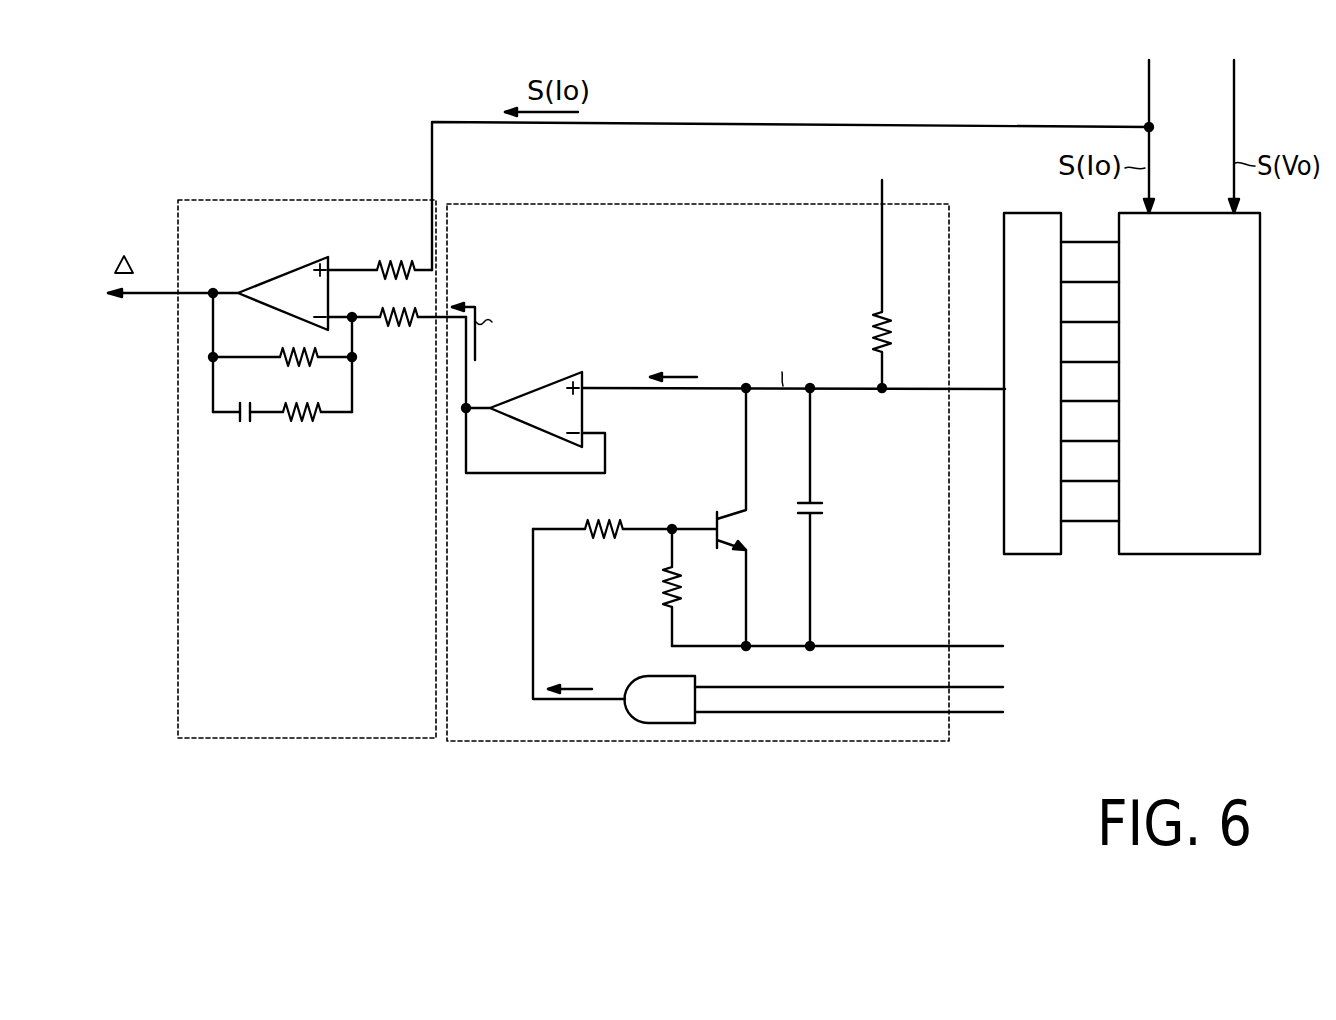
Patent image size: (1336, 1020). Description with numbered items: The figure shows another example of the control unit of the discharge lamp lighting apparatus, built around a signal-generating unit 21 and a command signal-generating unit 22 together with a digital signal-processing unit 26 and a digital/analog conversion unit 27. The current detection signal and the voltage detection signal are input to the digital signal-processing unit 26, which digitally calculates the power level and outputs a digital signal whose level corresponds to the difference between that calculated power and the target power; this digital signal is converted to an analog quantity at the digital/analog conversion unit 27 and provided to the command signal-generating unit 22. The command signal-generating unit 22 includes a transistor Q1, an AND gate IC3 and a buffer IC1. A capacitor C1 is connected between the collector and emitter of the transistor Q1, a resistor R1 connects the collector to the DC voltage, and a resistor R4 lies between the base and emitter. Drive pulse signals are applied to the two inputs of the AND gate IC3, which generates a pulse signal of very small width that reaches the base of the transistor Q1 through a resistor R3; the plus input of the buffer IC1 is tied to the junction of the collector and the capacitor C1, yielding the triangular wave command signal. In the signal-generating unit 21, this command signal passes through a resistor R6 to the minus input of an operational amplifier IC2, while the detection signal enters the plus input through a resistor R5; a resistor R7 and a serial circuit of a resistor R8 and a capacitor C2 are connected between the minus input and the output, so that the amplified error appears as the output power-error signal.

The signal-generating unit 21 is at (275, 200).
The command signal-generating unit 22 is at (745, 204).
The digital signal-processing unit 26 is at (1189, 548).
The digital/analog conversion unit 27 is at (1023, 547).
The buffer IC1 is at (534, 394).
The operational amplifier IC2 is at (278, 277).
The AND gate IC3 is at (651, 693).
The resistor R1 is at (895, 330).
The resistor R3 is at (588, 540).
The resistor R4 is at (658, 590).
The resistor R5 is at (389, 258).
The resistor R6 is at (402, 330).
The resistor R7 is at (298, 367).
The resistor R8 is at (303, 421).
The capacitor C1 is at (823, 510).
The capacitor C2 is at (246, 421).
The transistor Q1 is at (740, 530).